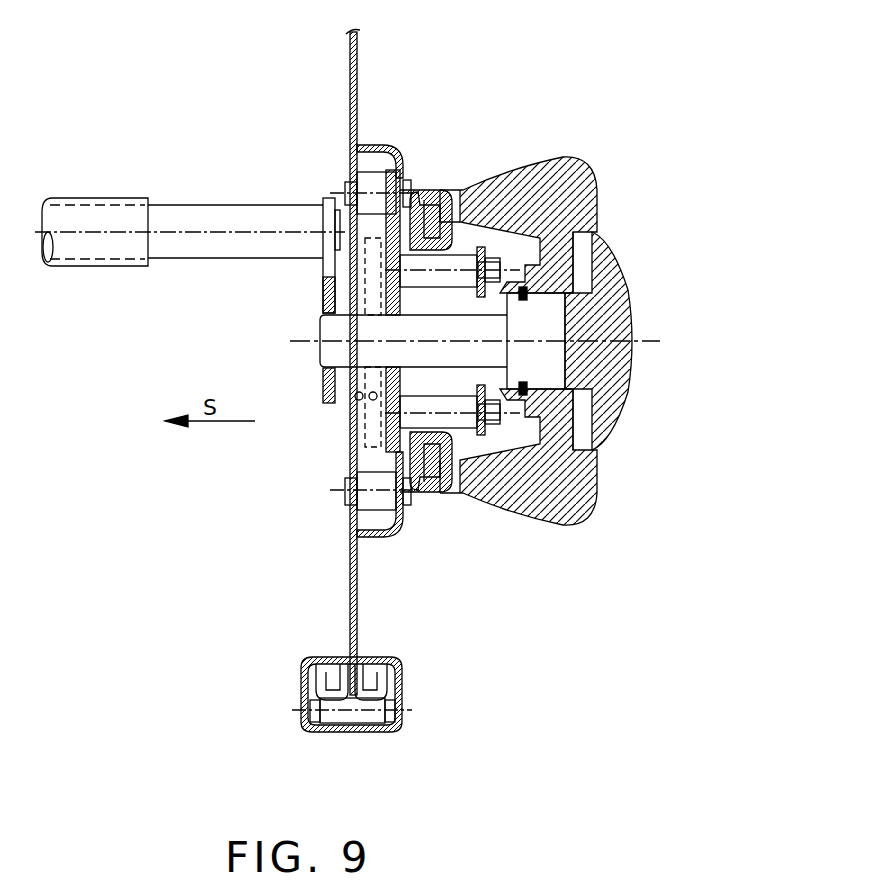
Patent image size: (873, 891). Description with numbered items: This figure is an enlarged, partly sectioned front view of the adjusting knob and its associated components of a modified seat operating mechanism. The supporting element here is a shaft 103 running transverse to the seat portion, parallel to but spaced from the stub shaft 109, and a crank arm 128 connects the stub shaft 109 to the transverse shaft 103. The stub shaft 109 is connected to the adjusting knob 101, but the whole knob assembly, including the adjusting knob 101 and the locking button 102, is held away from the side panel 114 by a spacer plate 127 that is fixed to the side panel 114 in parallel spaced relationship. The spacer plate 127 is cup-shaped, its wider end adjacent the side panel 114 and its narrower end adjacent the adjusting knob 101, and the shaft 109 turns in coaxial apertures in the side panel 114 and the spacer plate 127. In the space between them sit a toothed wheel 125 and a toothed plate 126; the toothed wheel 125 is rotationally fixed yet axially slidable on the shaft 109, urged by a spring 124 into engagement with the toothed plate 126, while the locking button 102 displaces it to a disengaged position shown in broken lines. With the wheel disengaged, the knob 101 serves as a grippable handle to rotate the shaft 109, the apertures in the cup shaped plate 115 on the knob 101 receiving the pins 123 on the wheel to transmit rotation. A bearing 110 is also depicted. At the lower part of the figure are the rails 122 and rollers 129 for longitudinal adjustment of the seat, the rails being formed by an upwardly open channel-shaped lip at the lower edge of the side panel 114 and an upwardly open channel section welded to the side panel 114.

The adjusting knob 101 is at (578, 178).
The locking button 102 is at (614, 252).
The shaft 103 is at (214, 215).
The stub shaft 109 is at (322, 358).
The bearing 110 is at (480, 262).
The side panel 114 is at (357, 66).
The cup shaped plate 115 is at (440, 200).
The rails 122 is at (390, 683).
The pins 123 is at (453, 260).
The spring 124 is at (355, 378).
The toothed wheel 125 is at (355, 396).
The toothed plate 126 is at (400, 178).
The spacer plate 127 is at (382, 150).
The crank arm 128 is at (325, 300).
The rollers 129 is at (375, 735).